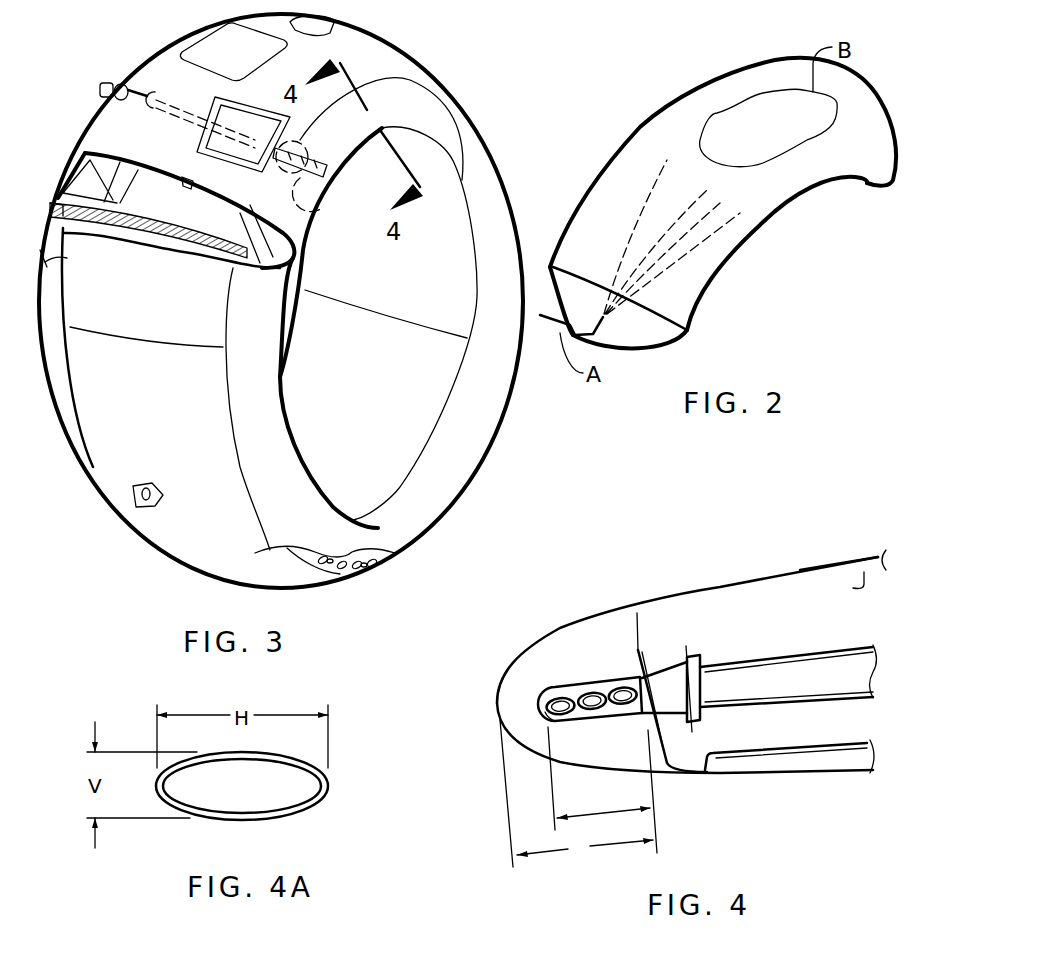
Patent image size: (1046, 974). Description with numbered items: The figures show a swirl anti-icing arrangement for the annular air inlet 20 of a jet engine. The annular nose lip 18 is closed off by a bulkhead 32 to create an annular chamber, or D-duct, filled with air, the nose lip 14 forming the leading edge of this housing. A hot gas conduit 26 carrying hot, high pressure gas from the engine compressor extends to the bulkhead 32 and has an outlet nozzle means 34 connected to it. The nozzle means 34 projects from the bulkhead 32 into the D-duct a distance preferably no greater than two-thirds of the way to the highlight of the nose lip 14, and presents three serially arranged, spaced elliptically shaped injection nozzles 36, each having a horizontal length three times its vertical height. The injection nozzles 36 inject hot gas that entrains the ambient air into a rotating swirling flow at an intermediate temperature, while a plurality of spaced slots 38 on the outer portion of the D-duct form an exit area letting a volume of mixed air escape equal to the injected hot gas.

In FIG. 2, the nose lip 14 is at (793, 197).
In FIG. 4, the nose lip 14 is at (500, 718).
In FIG. 3, the nose lip 18 is at (500, 148).
In FIG. 4, the nose lip 18 is at (612, 615).
In FIG. 4, the air inlet 20 is at (787, 570).
In FIG. 3, the hot gas conduit 26 is at (164, 80).
In FIG. 4, the hot gas conduit 26 is at (813, 653).
In FIG. 2, the bulkhead 32 is at (552, 267).
In FIG. 4, the bulkhead 32 is at (642, 652).
In FIG. 3, the nozzle means 34 is at (306, 180).
In FIG. 4, the nozzle means 34 is at (572, 685).
In FIG. 3, the elliptically shaped injection nozzles 36 is at (300, 545).
In FIG. 4, the elliptically shaped injection nozzles 36 is at (620, 690).
In FIG. 4A, the elliptically shaped injection nozzles 36 is at (320, 803).
In FIG. 3, the spaced slots 38 is at (395, 553).
In FIG. 4, the spaced slots 38 is at (550, 722).